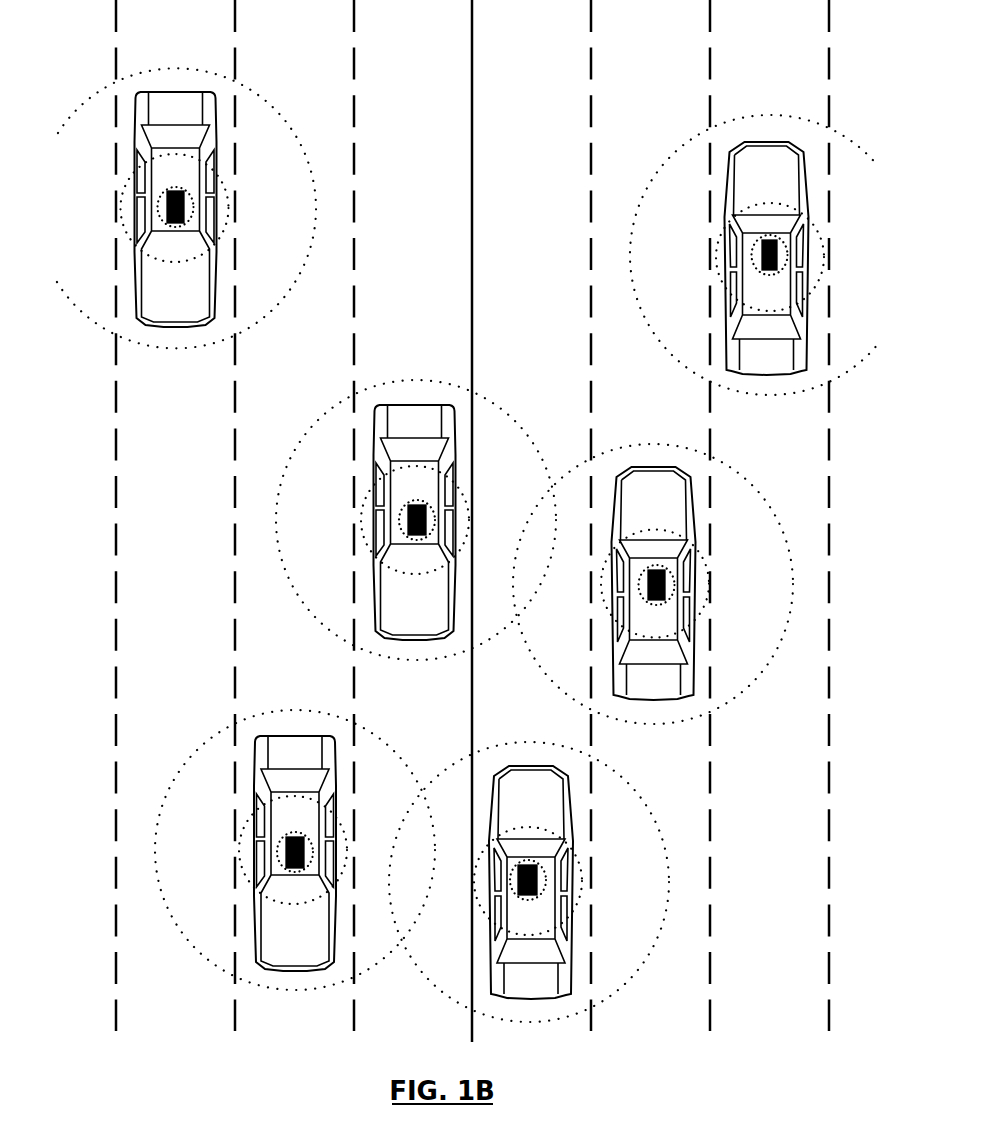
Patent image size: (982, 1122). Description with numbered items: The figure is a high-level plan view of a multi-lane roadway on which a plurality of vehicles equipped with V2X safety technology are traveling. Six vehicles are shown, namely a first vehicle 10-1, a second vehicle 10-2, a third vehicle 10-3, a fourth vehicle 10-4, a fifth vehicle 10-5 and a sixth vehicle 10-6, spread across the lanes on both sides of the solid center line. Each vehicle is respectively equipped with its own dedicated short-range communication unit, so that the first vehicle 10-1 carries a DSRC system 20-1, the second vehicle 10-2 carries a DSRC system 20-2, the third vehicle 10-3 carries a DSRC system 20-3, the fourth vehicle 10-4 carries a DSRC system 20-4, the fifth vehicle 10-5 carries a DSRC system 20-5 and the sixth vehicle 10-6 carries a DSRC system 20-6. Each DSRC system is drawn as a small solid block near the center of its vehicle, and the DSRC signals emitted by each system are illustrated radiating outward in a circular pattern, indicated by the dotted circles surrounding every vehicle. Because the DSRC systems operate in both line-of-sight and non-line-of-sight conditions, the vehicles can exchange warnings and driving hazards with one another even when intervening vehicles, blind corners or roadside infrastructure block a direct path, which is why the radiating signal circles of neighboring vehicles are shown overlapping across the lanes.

The vehicle 10-1 is at (176, 92).
The vehicle 10-2 is at (292, 736).
The vehicle 10-3 is at (412, 405).
The vehicle 10-4 is at (527, 766).
The vehicle 10-5 is at (654, 467).
The vehicle 10-6 is at (773, 142).
The DSRC system 20-1 is at (167, 208).
The DSRC system 20-2 is at (286, 848).
The DSRC system 20-3 is at (408, 521).
The DSRC system 20-4 is at (537, 882).
The DSRC system 20-5 is at (665, 591).
The DSRC system 20-6 is at (778, 266).